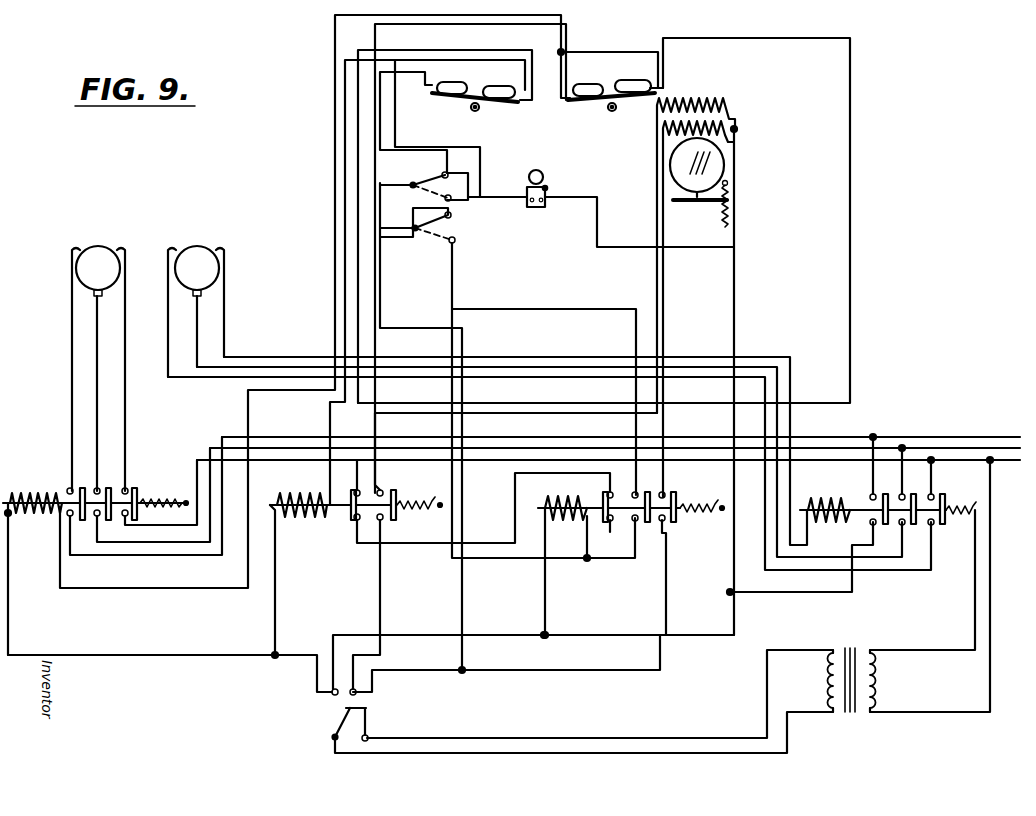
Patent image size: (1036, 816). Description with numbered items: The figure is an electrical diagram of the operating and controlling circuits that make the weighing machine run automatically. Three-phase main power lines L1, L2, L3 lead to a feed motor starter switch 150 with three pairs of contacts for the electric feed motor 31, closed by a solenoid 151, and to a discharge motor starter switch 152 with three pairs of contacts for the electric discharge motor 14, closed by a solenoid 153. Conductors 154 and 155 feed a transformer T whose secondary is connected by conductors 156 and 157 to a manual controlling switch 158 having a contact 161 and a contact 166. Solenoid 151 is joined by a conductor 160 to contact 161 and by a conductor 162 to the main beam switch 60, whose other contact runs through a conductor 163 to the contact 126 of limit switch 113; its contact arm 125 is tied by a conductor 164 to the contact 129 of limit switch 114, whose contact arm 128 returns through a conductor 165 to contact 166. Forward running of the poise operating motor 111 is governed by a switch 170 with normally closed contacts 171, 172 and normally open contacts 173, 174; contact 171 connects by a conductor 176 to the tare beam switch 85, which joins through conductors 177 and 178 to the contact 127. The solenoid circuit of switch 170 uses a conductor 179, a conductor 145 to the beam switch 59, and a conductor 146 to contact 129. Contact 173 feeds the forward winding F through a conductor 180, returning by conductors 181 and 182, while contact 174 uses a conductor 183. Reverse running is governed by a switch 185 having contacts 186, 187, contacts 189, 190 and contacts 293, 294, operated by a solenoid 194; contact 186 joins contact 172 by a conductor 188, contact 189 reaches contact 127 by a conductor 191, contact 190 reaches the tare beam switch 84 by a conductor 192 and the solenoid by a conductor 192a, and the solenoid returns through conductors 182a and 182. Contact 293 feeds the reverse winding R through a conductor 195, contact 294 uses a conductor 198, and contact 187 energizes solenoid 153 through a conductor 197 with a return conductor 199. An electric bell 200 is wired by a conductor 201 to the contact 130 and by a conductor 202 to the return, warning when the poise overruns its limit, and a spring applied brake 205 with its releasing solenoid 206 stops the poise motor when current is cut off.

The electric feed motor 31 is at (93, 258).
The electric discharge motor 14 is at (192, 258).
The conductor 178 is at (482, 28).
The conductor 177 is at (592, 52).
The conductor 176 is at (784, 36).
The conductor 145 is at (345, 160).
The conductor 146 is at (380, 98).
The conductor 192 is at (358, 115).
The conductor 163 is at (392, 100).
The beam controlled switch 59 is at (450, 78).
The main beam switch 60 is at (500, 80).
The tare beam switch 84 is at (583, 86).
The tare beam switch 85 is at (632, 76).
The forward winding F is at (698, 101).
The reverse winding R is at (740, 126).
The poise operating motor 111 is at (697, 167).
The spring applied brake 205 is at (697, 202).
The solenoid 206 is at (732, 219).
The electric bell 200 is at (546, 184).
The conductor 201 is at (497, 197).
The conductor 202 is at (590, 196).
The contact arm 128 is at (420, 178).
The contact 130 is at (440, 192).
The limit switch 114 is at (440, 172).
The contact 129 is at (448, 172).
The conductor 164 is at (470, 185).
The limit switch 113 is at (430, 220).
The contact 126 is at (458, 218).
The contact arm 125 is at (440, 238).
The contact 127 is at (456, 243).
The conductor 165 is at (382, 298).
The conductor 191 is at (524, 312).
The conductor 180 is at (655, 268).
The conductor 195 is at (665, 282).
The conductor 181 is at (742, 298).
The conductor 162 is at (340, 255).
The feed motor starter switch 150 is at (68, 490).
The solenoid 151 is at (36, 518).
The main power line L1 is at (950, 438).
The main power line L2 is at (994, 446).
The main power line L3 is at (996, 465).
The switch 170 is at (335, 520).
The contact 171 is at (354, 490).
The contact 173 is at (384, 490).
The contact 172 is at (356, 522).
The contact 174 is at (382, 522).
The conductor 179 is at (285, 592).
The conductor 183 is at (380, 600).
The contact 186 is at (608, 492).
The solenoid 194 is at (548, 500).
The conductor 188 is at (515, 478).
The conductor 192a is at (585, 540).
The contact 187 is at (612, 534).
The contact 189 is at (638, 490).
The switch 185 is at (666, 492).
The contact 293 is at (682, 500).
The contact 190 is at (664, 540).
The conductor 182a is at (545, 598).
The conductor 182 is at (596, 636).
The conductor 197 is at (698, 535).
The contact 294 is at (725, 600).
The conductor 199 is at (765, 592).
The conductor 198 is at (660, 660).
The discharge motor starter switch 152 is at (860, 500).
The solenoid 153 is at (816, 497).
The conductor 154 is at (975, 618).
The conductor 155 is at (990, 662).
The transformer T is at (849, 648).
The conductor 156 is at (688, 738).
The conductor 157 is at (603, 755).
The manual controlling switch 158 is at (375, 718).
The contact 161 is at (330, 695).
The contact 166 is at (358, 694).
The conductor 160 is at (102, 655).